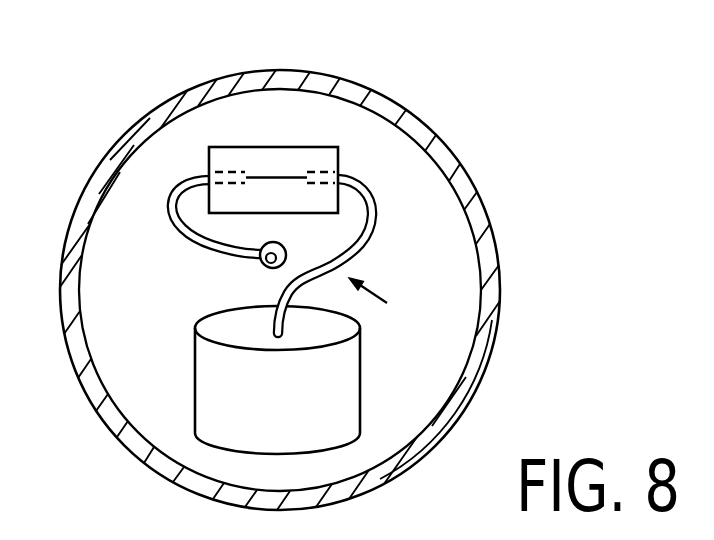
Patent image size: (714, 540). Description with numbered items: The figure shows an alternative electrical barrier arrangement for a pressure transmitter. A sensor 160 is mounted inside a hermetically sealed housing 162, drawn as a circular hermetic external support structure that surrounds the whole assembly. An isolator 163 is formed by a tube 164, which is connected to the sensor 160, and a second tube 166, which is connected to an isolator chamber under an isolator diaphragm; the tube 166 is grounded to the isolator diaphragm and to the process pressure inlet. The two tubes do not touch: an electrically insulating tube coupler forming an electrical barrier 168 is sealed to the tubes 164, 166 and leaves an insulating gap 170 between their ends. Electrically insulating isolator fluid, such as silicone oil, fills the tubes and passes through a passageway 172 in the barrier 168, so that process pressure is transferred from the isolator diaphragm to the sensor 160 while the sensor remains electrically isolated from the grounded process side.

The sensor 160 is at (335, 378).
The hermetically sealed housing 162 is at (463, 170).
The isolator 163 is at (395, 300).
The tube 164 is at (380, 233).
The tube 166 is at (166, 198).
The electrical barrier 168 is at (276, 147).
The insulating gap 170 is at (293, 161).
The passageway 172 is at (260, 173).